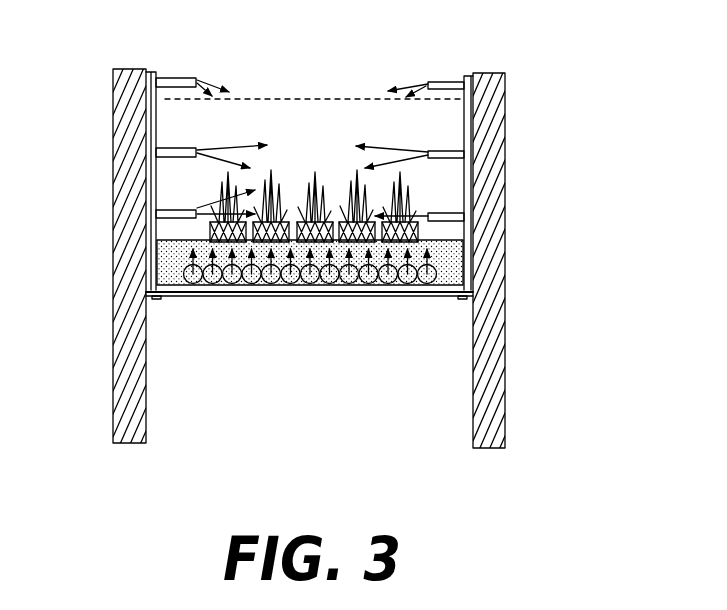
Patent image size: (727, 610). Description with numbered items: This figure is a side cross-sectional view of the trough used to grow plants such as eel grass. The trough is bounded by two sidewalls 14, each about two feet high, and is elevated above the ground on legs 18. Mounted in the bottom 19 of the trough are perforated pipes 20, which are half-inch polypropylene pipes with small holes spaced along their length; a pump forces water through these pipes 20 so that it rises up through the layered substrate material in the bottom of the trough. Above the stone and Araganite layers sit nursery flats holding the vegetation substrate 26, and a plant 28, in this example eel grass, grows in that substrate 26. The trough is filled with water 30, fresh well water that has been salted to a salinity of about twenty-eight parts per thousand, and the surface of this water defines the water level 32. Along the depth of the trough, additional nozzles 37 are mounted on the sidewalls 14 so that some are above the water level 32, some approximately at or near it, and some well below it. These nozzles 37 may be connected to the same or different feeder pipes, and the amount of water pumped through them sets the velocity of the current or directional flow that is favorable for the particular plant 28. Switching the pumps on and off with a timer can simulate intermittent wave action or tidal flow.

The sidewall 14 is at (471, 170).
The leg 18 is at (496, 386).
The bottom 19 is at (215, 297).
The perforated pipe 20 is at (286, 278).
The vegetation substrate 26 is at (470, 258).
The plant 28 is at (372, 190).
The water 30 is at (300, 106).
The water level 32 is at (363, 100).
The nozzle 37 is at (450, 82).